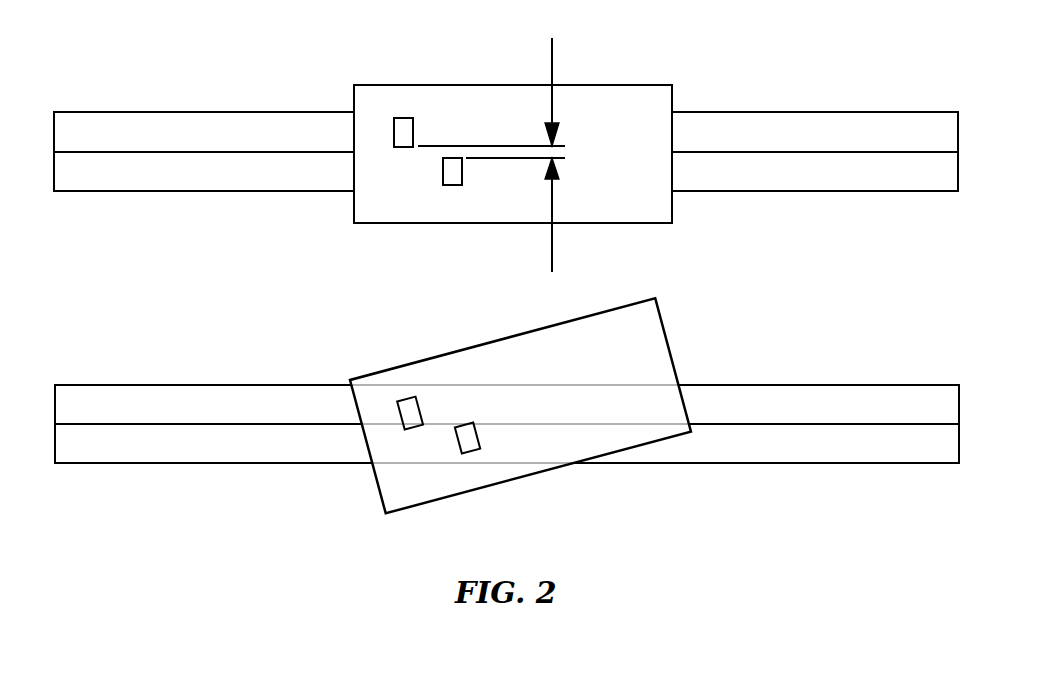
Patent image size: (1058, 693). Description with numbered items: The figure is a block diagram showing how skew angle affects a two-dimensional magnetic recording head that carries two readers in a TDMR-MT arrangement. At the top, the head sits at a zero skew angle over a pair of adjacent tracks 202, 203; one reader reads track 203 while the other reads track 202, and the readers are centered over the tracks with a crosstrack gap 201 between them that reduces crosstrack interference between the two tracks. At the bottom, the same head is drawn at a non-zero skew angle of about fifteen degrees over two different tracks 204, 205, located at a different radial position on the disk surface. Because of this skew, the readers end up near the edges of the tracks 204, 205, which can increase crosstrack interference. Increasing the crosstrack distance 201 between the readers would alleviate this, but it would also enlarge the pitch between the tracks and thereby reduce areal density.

The crosstrack gap 201 is at (556, 144).
The track 202 is at (192, 182).
The track 203 is at (184, 122).
The track 204 is at (192, 458).
The track 205 is at (184, 398).